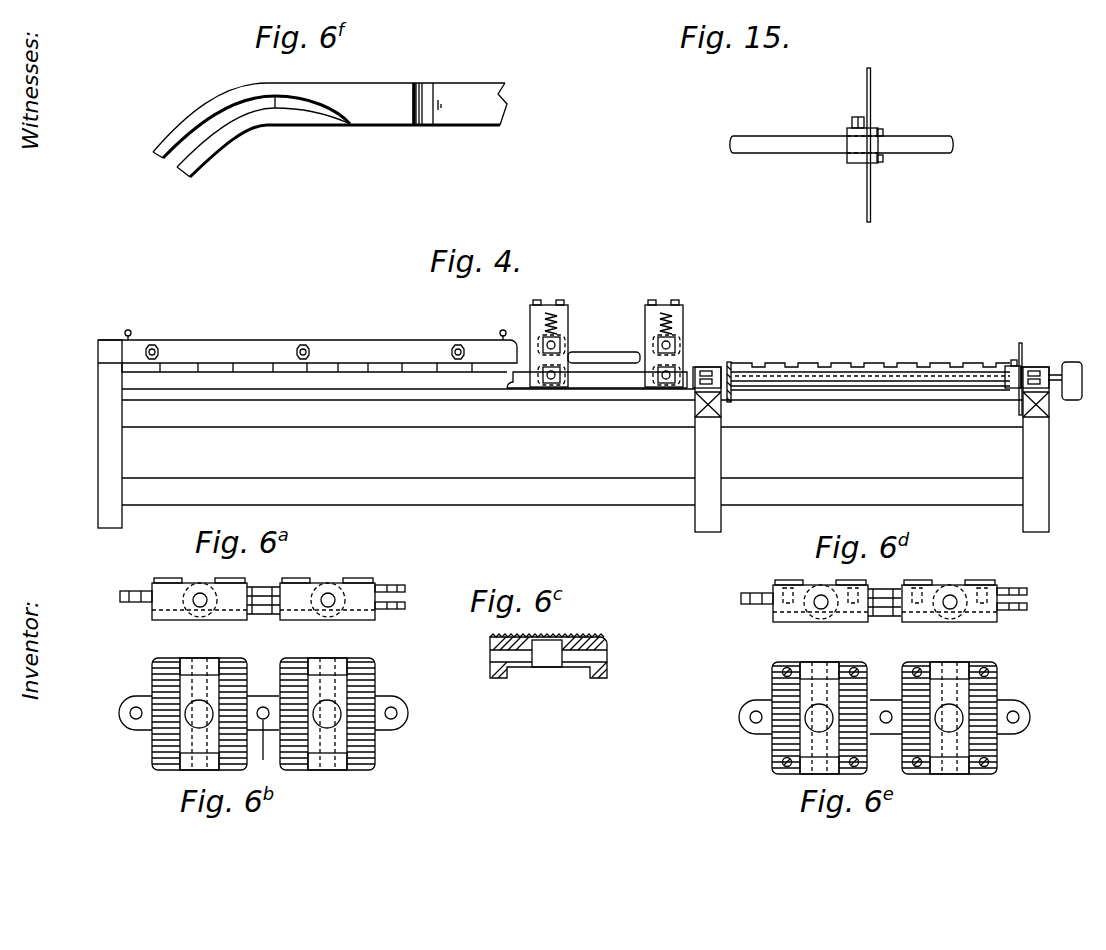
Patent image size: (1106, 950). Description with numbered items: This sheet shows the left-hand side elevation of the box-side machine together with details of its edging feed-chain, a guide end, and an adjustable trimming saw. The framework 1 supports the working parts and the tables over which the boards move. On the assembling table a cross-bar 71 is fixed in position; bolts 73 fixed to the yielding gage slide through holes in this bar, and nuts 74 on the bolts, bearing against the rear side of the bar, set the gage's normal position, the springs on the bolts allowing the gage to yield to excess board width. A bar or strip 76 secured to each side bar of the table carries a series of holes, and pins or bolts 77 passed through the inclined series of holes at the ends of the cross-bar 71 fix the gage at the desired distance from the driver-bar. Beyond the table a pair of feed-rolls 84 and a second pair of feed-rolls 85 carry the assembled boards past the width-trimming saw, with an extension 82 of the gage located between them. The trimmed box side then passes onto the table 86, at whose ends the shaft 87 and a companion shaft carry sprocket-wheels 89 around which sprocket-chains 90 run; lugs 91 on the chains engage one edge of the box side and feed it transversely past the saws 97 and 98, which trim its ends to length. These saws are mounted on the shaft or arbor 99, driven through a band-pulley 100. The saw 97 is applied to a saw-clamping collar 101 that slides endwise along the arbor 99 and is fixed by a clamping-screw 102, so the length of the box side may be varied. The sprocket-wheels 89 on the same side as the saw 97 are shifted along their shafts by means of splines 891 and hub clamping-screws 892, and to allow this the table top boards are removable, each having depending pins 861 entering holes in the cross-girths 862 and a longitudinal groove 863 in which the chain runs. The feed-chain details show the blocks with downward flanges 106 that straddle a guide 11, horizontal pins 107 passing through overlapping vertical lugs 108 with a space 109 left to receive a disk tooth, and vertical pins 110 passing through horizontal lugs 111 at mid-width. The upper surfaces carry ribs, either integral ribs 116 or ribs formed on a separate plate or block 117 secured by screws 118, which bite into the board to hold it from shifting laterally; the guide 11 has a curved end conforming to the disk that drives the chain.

In FIG. 4, the framework 1 is at (98, 398).
In FIG. 6F, the guide 11 is at (241, 86).
In FIG. 4, the cross-bar 71 is at (248, 340).
In FIG. 4, the bolt 73 is at (98, 366).
In FIG. 4, the nut 74 is at (158, 348).
In FIG. 4, the bar or strip 76 is at (98, 366).
In FIG. 4, the pin or bolt 77 is at (129, 330).
In FIG. 4, the extension of the gage 82 is at (612, 352).
In FIG. 4, the feed-rolls 84 is at (562, 344).
In FIG. 4, the feed-rolls 85 is at (676, 345).
In FIG. 4, the table 86 is at (855, 367).
In FIG. 4, the depending pin 861 is at (830, 370).
In FIG. 4, the cross-girth 862 is at (817, 390).
In FIG. 4, the groove 863 is at (915, 365).
In FIG. 4, the shaft 87 is at (886, 386).
In FIG. 4, the sprocket-wheel 89 is at (742, 380).
In FIG. 4, the spline 891 is at (905, 385).
In FIG. 4, the clamping-screw 892 is at (1012, 370).
In FIG. 4, the sprocket-chain 90 is at (722, 385).
In FIG. 4, the lug 91 is at (738, 373).
In FIG. 15, the saw 97 is at (872, 86).
In FIG. 4, the saw 97 is at (1023, 344).
In FIG. 4, the saw 98 is at (735, 364).
In FIG. 15, the shaft or arbor 99 is at (792, 155).
In FIG. 4, the shaft or arbor 99 is at (1052, 380).
In FIG. 4, the band-pulley 100 is at (1076, 362).
In FIG. 15, the saw-clamping collar 101 is at (847, 163).
In FIG. 15, the clamping-screw 102 is at (851, 118).
In FIG. 6A, the flange 106 is at (222, 618).
In FIG. 6B, the flange 106 is at (263, 714).
In FIG. 6C, the flange 106 is at (497, 678).
In FIG. 6D, the flange 106 is at (790, 623).
In FIG. 6E, the flange 106 is at (884, 718).
In FIG. 6A, the horizontal pin 107 is at (195, 599).
In FIG. 6B, the horizontal pin 107 is at (194, 771).
In FIG. 6C, the horizontal pin 107 is at (498, 656).
In FIG. 6D, the horizontal pin 107 is at (820, 605).
In FIG. 6E, the horizontal pin 107 is at (815, 663).
In FIG. 6A, the vertical lug or ear 108 is at (197, 592).
In FIG. 6B, the vertical lug or ear 108 is at (190, 767).
In FIG. 6D, the vertical lug or ear 108 is at (818, 588).
In FIG. 6E, the vertical lug or ear 108 is at (836, 664).
In FIG. 6B, the space 109 is at (163, 712).
In FIG. 6C, the space 109 is at (547, 662).
In FIG. 6E, the space 109 is at (792, 712).
In FIG. 6A, the vertical pin 110 is at (262, 584).
In FIG. 6B, the vertical pin 110 is at (259, 751).
In FIG. 6D, the vertical pin 110 is at (892, 590).
In FIG. 6E, the vertical pin 110 is at (886, 710).
In FIG. 6A, the horizontal lug or ear 111 is at (118, 596).
In FIG. 6B, the horizontal lug or ear 111 is at (124, 722).
In FIG. 6D, the horizontal lug or ear 111 is at (740, 598).
In FIG. 6E, the horizontal lug or ear 111 is at (740, 719).
In FIG. 6A, the rib 116 is at (165, 580).
In FIG. 6B, the rib 116 is at (160, 714).
In FIG. 6C, the rib 116 is at (585, 638).
In FIG. 6D, the plate or block 117 is at (1030, 565).
In FIG. 6E, the plate or block 117 is at (756, 717).
In FIG. 6D, the screw 118 is at (776, 581).
In FIG. 6E, the screw 118 is at (985, 672).